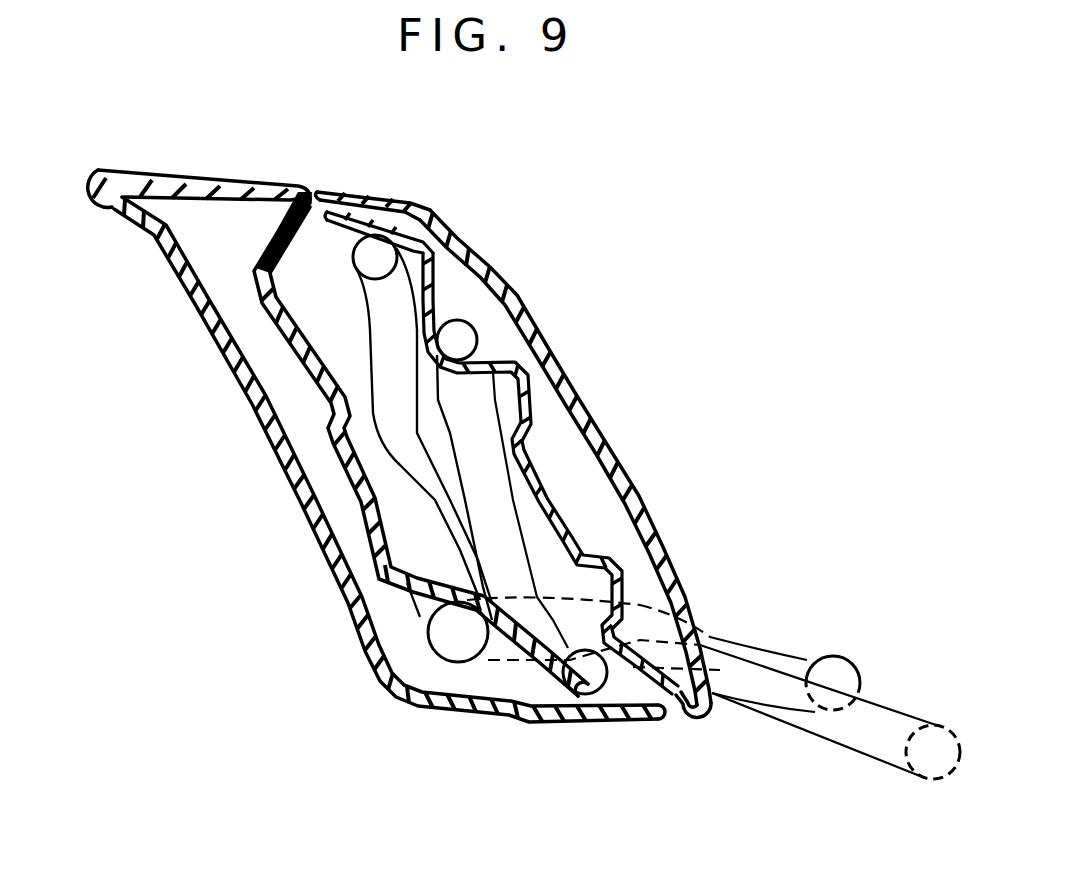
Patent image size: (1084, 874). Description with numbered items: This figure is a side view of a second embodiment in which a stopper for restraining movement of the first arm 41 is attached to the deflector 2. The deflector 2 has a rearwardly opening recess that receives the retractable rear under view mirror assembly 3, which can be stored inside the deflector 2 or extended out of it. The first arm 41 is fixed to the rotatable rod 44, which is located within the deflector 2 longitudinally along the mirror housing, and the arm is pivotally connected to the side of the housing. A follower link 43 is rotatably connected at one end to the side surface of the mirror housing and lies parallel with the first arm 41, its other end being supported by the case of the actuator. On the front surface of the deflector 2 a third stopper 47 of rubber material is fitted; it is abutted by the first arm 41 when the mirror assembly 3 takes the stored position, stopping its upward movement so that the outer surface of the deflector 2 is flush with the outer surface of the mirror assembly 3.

The deflector 2 is at (175, 268).
The retractable rear under view mirror assembly 3 is at (513, 297).
The first arm 41 is at (383, 410).
The follower link 43 is at (493, 503).
The rotatable rod 44 is at (455, 653).
The third stopper 47 is at (367, 528).